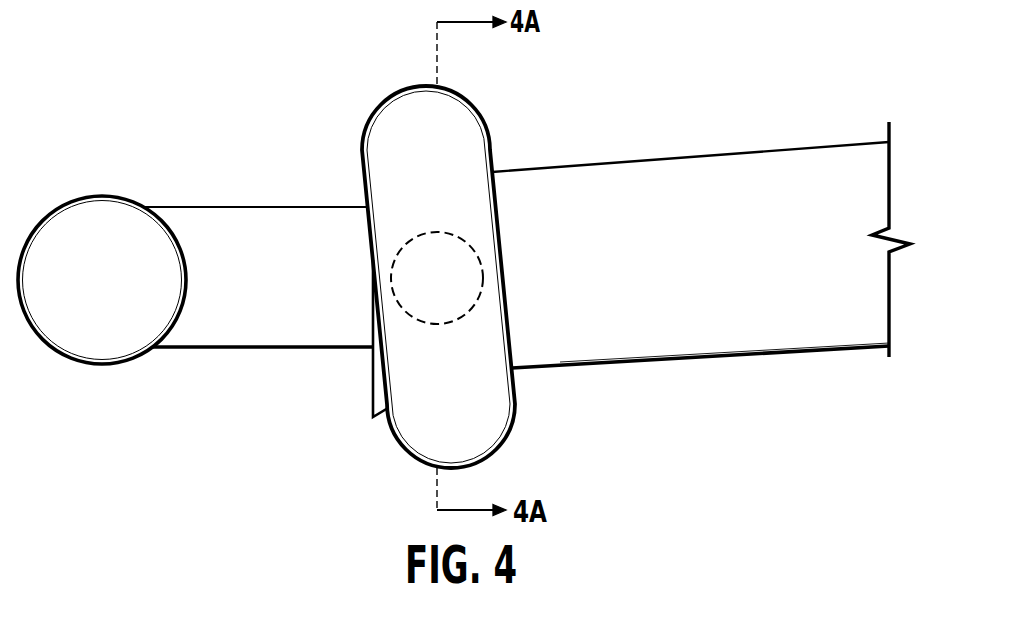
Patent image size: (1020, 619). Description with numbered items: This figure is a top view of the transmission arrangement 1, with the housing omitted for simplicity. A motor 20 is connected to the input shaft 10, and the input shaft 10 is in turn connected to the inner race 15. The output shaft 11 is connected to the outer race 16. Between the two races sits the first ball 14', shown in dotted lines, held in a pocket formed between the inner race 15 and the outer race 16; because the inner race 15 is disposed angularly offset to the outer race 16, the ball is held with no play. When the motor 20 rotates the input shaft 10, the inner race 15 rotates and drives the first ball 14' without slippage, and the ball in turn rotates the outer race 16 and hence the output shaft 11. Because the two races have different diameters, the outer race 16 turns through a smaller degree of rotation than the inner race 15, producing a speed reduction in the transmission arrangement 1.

The transmission arrangement 1 is at (407, 73).
The input shaft 10 is at (277, 205).
The output shaft 11 is at (715, 152).
The first ball 14' is at (463, 210).
The inner race 15 is at (372, 393).
The outer race 16 is at (400, 92).
The motor 20 is at (98, 195).